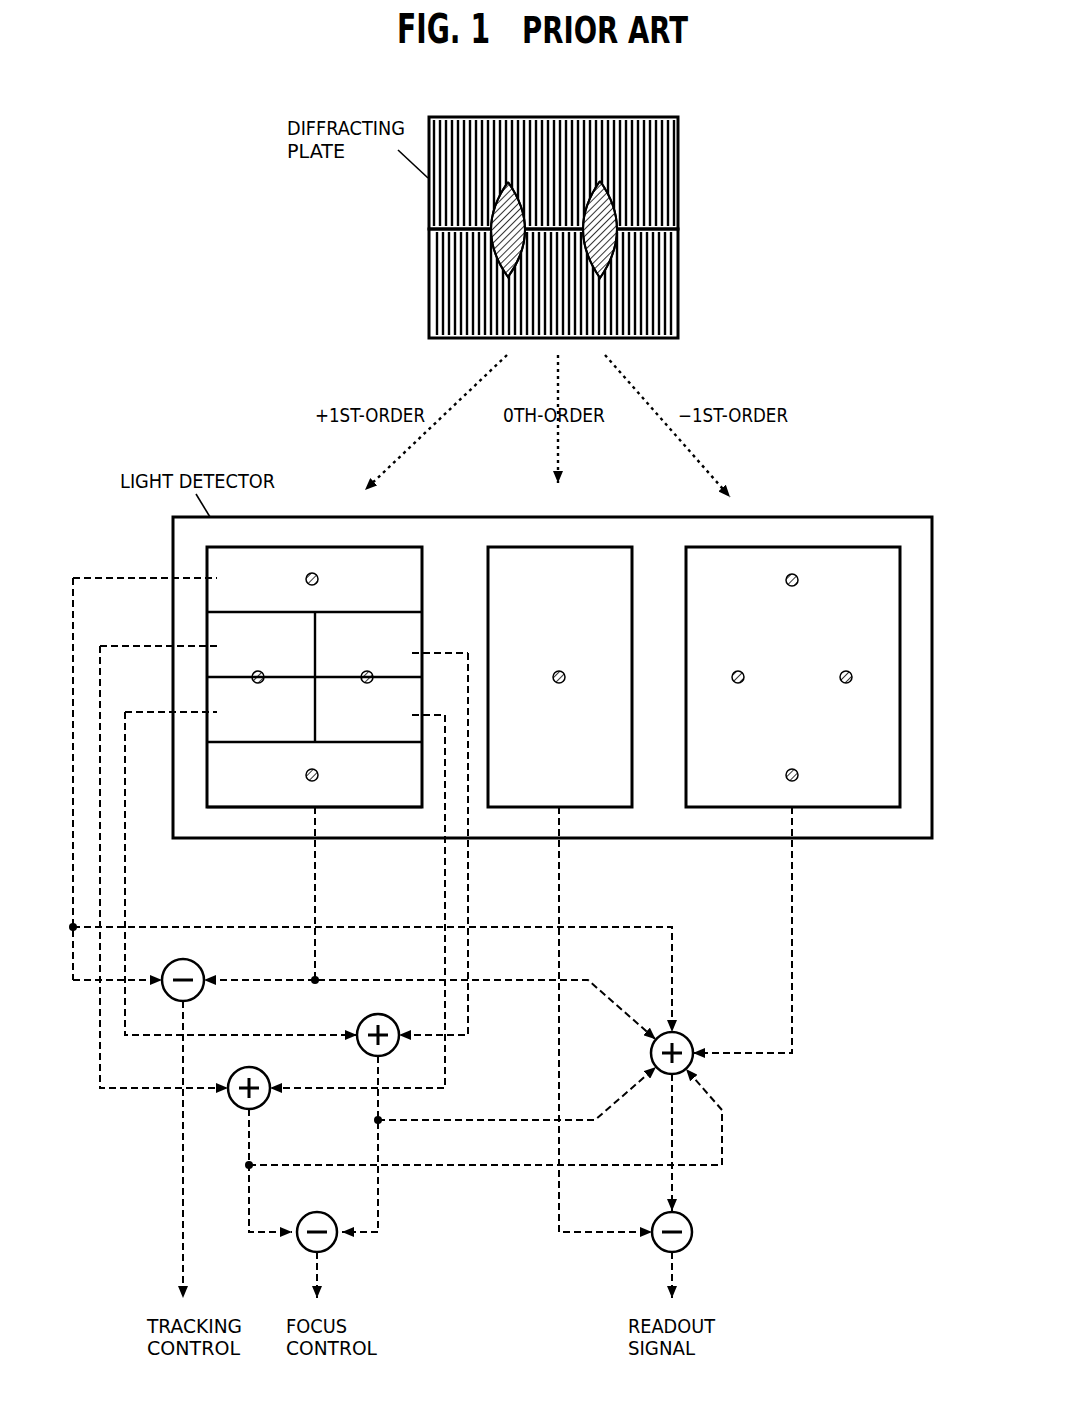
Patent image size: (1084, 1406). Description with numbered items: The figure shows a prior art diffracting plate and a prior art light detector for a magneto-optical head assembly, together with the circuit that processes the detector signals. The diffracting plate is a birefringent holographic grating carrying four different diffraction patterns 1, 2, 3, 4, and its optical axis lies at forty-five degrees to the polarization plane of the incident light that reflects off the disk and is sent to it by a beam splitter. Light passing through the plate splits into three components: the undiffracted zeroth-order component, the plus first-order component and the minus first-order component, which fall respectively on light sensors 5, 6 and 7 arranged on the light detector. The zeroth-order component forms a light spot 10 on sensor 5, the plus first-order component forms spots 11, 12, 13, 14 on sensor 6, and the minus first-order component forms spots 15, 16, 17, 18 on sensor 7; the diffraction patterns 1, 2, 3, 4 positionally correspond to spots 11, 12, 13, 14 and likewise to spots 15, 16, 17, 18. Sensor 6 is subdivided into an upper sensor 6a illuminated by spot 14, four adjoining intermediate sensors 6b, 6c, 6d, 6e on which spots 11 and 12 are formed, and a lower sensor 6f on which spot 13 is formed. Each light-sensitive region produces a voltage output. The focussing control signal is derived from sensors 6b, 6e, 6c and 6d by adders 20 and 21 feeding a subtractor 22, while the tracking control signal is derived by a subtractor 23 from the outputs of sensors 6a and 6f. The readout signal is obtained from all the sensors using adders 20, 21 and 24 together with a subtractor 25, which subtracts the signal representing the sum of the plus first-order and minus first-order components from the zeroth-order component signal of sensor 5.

The diffraction pattern 1 is at (668, 183).
The diffraction pattern 2 is at (668, 302).
The diffraction pattern 3 is at (508, 180).
The diffraction pattern 4 is at (600, 180).
The light sensor 5 is at (557, 555).
The light sensor 6 is at (311, 540).
The upper sensor 6a is at (213, 555).
The intermediate sensor 6b is at (217, 632).
The intermediate sensor 6c is at (217, 702).
The intermediate sensor 6d is at (407, 640).
The intermediate sensor 6e is at (407, 708).
The lower sensor 6f is at (217, 793).
The light sensor 7 is at (801, 555).
The light spot 10 is at (558, 671).
The light spot 11 is at (258, 671).
The light spot 12 is at (367, 671).
The light spot 13 is at (319, 775).
The light spot 14 is at (319, 580).
The light spot 15 is at (845, 671).
The light spot 16 is at (737, 671).
The light spot 17 is at (792, 587).
The light spot 18 is at (791, 768).
The adder 20 is at (265, 1078).
The adder 21 is at (393, 1027).
The subtractor 22 is at (324, 1220).
The subtractor 23 is at (199, 971).
The adder 24 is at (685, 1038).
The subtractor 25 is at (689, 1222).